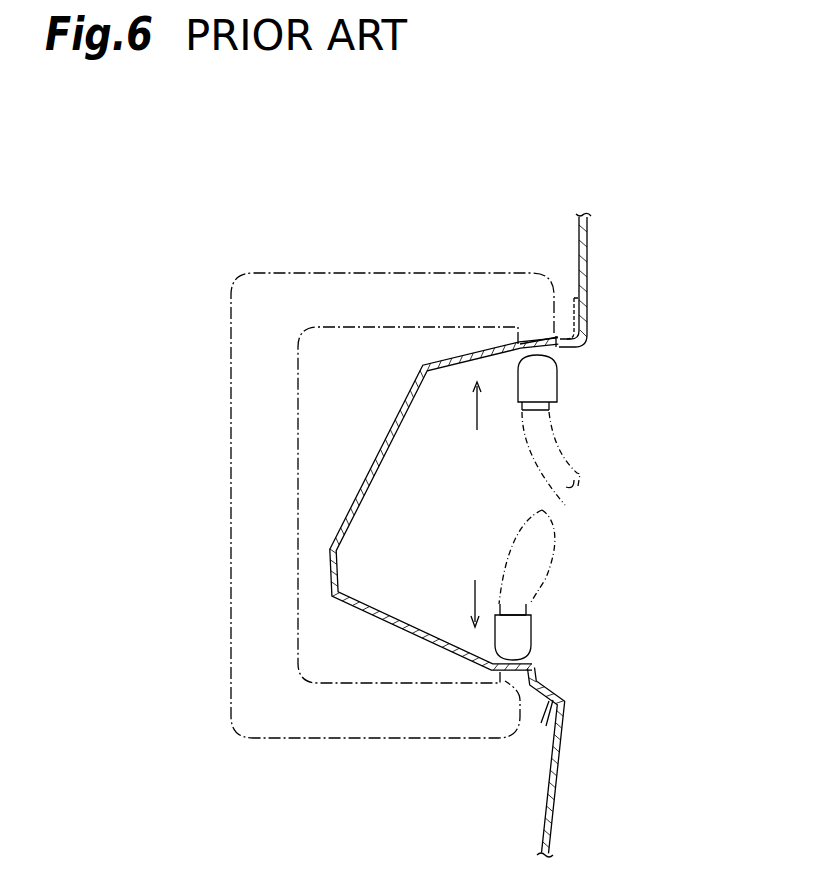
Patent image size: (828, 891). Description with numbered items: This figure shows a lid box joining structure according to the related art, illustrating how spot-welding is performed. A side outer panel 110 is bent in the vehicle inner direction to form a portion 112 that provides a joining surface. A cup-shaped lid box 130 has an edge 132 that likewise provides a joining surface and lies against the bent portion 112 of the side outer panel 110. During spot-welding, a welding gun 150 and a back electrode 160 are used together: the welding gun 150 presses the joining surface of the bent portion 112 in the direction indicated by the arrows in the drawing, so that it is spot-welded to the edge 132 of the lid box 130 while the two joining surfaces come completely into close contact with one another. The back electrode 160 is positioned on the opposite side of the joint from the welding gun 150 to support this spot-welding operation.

The side outer panel 110 is at (589, 243).
The portion made by bending the side outer panel 112 is at (561, 349).
The cup-shaped lid box 130 is at (370, 487).
The edge of the lid box 132 is at (547, 338).
The welding gun 150 is at (523, 572).
The back electrode 160 is at (317, 740).